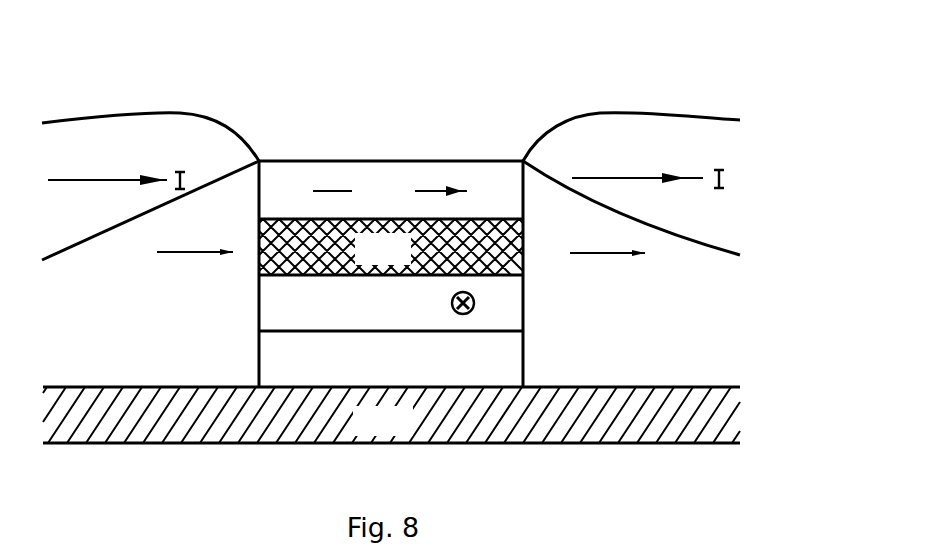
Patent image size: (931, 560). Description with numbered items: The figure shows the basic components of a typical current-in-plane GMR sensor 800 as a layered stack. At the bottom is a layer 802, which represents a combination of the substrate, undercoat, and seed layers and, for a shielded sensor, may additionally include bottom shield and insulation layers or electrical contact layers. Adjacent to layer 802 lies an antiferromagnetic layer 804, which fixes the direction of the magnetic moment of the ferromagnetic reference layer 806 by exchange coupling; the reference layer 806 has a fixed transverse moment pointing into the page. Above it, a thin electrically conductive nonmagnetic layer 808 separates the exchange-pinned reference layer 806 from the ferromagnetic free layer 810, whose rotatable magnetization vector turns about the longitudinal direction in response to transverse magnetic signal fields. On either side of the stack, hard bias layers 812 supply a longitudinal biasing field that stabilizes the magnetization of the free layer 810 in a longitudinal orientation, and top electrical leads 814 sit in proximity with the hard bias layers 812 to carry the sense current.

The current-in-plane GMR sensor 800 is at (793, 126).
The layer 802 is at (391, 415).
The antiferromagnetic layer 804 is at (391, 359).
The ferromagnetic reference layer 806 is at (391, 303).
The electrically conductive nonmagnetic layer 808 is at (391, 247).
The ferromagnetic free layer 810 is at (391, 190).
The hard bias layers 812 is at (391, 230).
The top electrical leads 814 is at (391, 151).